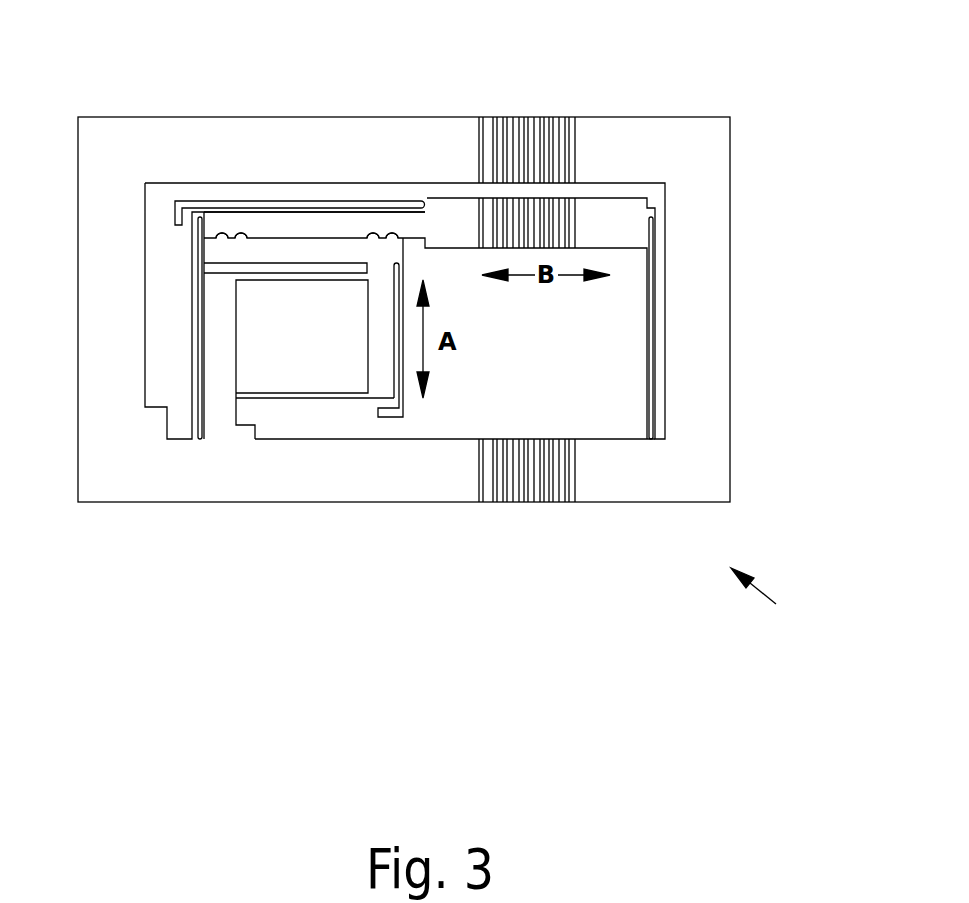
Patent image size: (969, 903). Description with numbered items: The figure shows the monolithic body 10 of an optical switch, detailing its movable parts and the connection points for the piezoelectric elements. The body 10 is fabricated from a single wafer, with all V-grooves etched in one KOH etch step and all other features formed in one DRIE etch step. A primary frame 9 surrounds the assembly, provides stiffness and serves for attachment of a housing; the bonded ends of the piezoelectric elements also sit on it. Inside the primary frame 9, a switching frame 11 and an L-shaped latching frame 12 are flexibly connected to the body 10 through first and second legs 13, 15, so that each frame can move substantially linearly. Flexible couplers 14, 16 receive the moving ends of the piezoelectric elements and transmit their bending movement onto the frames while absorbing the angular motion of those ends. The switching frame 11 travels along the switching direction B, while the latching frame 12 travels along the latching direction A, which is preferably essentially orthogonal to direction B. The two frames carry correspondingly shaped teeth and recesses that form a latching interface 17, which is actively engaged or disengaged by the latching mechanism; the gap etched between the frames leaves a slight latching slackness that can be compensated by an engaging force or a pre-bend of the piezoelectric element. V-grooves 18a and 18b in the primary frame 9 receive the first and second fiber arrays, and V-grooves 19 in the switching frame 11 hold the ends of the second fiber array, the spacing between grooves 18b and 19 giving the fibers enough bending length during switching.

The primary frame 9 is at (178, 487).
The body 10 is at (770, 596).
The switching frame 11 is at (330, 220).
The latching frame 12 is at (272, 250).
The first legs 13 is at (192, 312).
The coupler 14 is at (188, 198).
The second legs 15 is at (305, 280).
The coupler 16 is at (403, 403).
The latching interface 17 is at (241, 233).
The V-grooves 18a is at (567, 442).
The V-grooves 18b is at (567, 133).
The V-grooves 19 is at (565, 218).